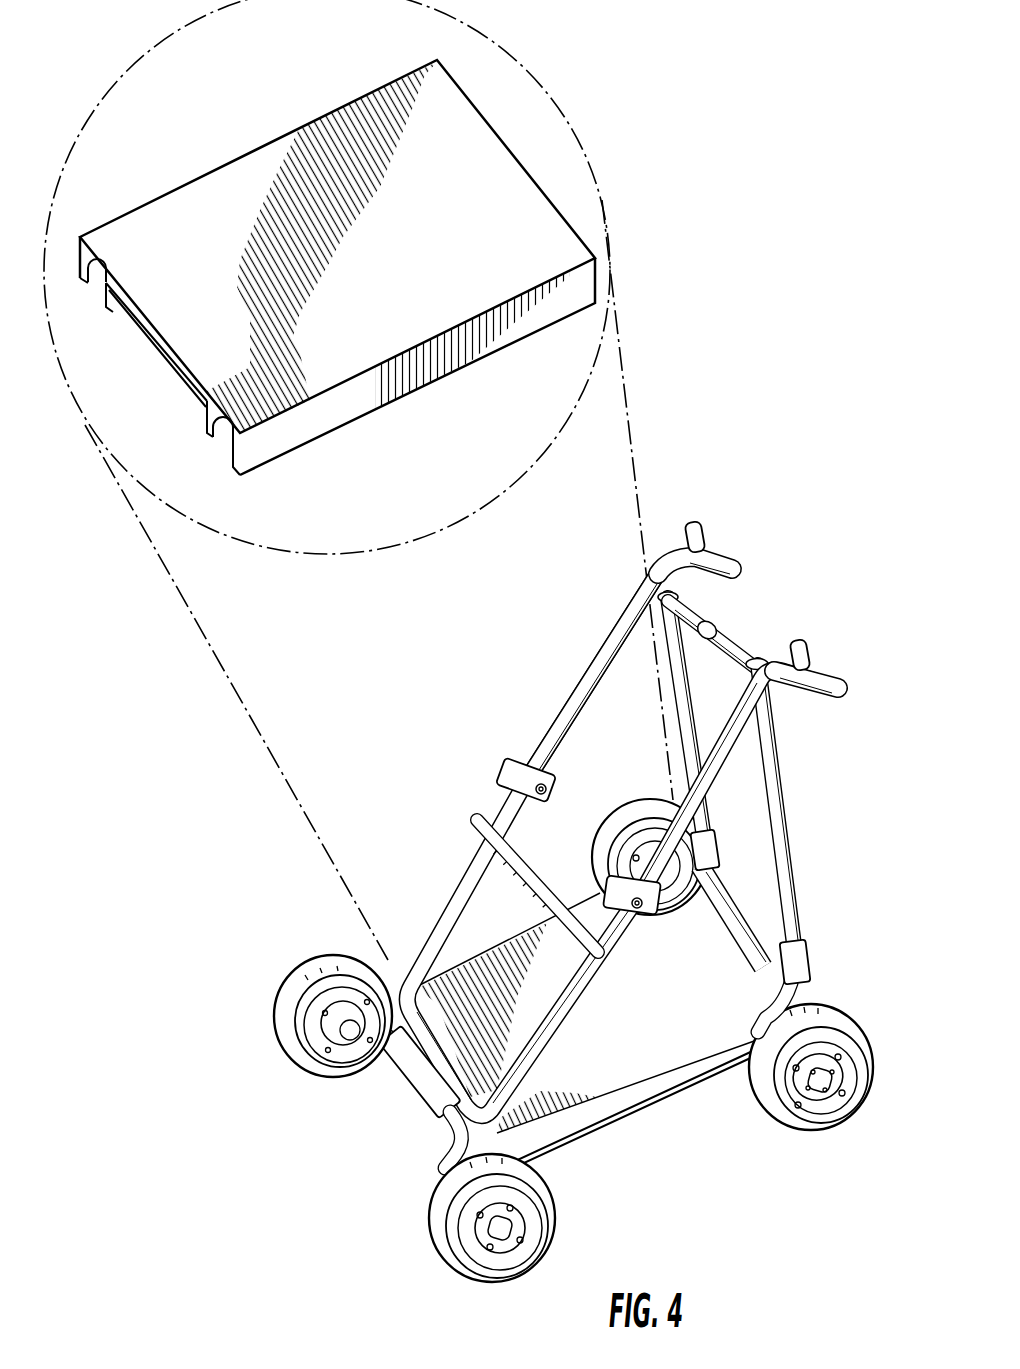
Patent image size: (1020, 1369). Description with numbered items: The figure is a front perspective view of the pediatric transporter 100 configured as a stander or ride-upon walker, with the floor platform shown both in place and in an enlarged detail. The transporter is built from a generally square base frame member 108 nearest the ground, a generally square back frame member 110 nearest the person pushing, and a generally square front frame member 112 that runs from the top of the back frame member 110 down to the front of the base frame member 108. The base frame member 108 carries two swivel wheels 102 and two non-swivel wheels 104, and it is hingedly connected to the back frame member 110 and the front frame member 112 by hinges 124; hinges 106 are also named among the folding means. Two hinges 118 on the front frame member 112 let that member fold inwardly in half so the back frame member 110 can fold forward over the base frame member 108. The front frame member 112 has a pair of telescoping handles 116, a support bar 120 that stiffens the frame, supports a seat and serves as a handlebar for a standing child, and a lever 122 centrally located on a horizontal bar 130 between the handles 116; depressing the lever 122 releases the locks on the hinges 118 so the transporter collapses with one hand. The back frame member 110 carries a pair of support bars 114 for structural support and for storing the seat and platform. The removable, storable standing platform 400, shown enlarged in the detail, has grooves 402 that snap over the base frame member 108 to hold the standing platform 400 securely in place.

The pediatric transporter 100 is at (446, 650).
The swivel wheels 102 is at (343, 962).
The non-swivel wheels 104 is at (640, 800).
The hinges 106 is at (427, 1070).
The base frame member 108 is at (633, 1120).
The back frame member 110 is at (790, 832).
The front frame member 112 is at (604, 655).
The support bars 114 is at (774, 745).
The handles 116 is at (713, 557).
The hinges 118 is at (528, 762).
The support bar 120 is at (477, 820).
The lever 122 is at (688, 612).
The hinges 124 is at (708, 847).
The horizontal bar 130 is at (718, 628).
The standing platform 400 is at (326, 193).
The grooves 402 is at (85, 300).